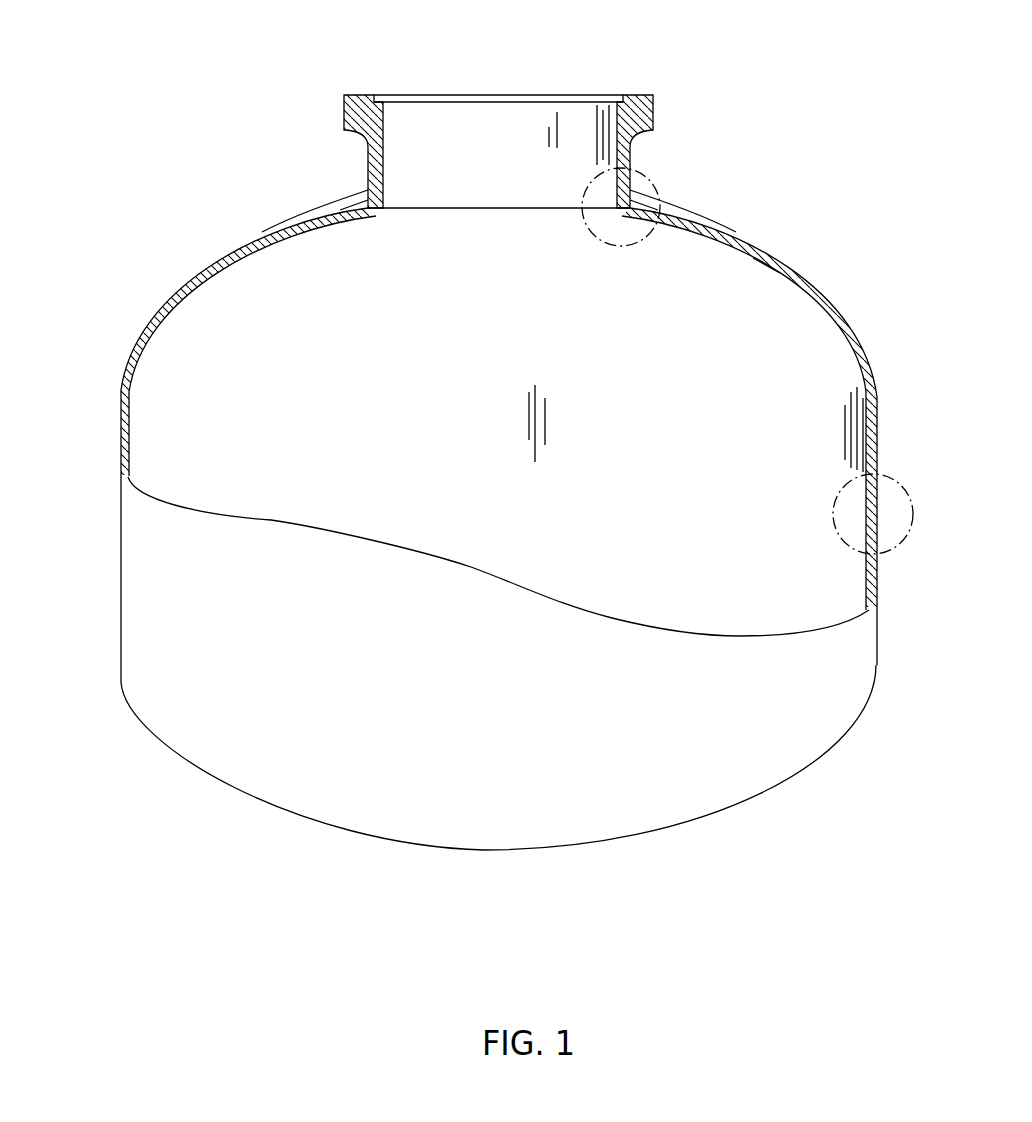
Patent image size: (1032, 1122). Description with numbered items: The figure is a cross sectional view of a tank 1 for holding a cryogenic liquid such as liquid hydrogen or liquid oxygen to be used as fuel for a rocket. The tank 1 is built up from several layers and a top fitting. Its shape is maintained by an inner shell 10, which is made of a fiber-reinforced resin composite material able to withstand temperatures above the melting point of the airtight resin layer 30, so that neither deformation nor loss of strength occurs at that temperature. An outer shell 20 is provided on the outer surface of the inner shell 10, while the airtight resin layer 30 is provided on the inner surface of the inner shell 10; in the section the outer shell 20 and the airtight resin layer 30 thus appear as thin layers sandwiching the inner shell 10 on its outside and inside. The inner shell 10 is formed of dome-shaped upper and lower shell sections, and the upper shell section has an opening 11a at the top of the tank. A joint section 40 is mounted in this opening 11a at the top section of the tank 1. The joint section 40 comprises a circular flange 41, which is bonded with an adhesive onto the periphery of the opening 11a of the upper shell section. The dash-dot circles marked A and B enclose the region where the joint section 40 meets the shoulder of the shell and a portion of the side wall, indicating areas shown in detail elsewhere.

The tank 1 is at (507, 31).
The inner shell 10 is at (208, 263).
The opening 11a is at (378, 211).
The outer shell 20 is at (121, 400).
The airtight resin layer 30 is at (132, 432).
The joint section 40 is at (654, 99).
The circular flange 41 is at (365, 201).
The detail region A is at (640, 172).
The detail region B is at (843, 492).